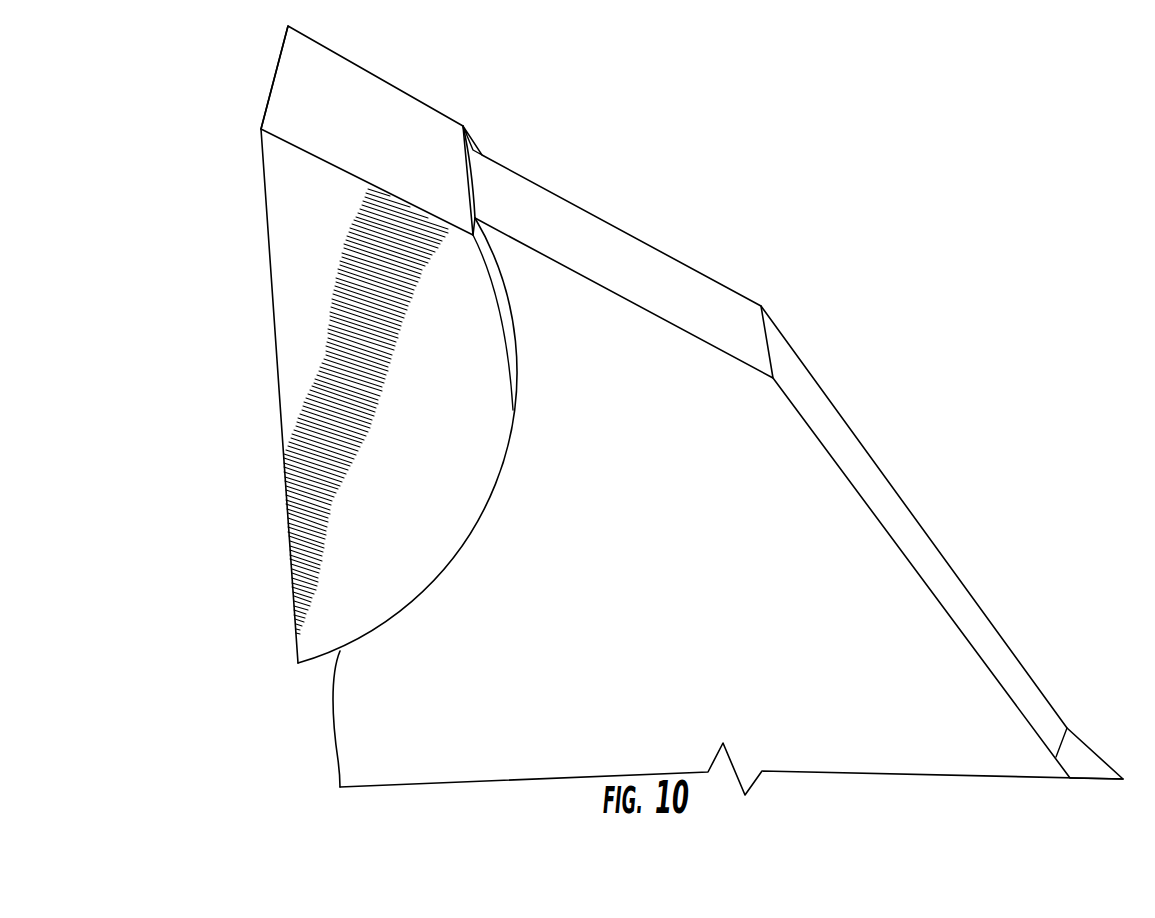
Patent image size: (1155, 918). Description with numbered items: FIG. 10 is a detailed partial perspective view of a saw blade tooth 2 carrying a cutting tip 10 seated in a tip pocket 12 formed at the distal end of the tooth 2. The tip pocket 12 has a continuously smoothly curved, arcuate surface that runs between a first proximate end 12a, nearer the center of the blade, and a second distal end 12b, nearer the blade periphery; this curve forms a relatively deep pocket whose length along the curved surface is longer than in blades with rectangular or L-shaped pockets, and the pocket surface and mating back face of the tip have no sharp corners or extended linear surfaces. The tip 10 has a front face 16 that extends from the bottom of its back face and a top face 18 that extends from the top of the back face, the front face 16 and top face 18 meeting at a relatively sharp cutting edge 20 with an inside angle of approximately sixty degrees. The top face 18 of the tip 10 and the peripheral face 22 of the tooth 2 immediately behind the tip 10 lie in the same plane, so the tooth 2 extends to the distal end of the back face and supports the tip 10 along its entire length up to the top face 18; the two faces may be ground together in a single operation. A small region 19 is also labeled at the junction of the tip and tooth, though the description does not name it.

The tip 10 is at (452, 109).
The top face 18 is at (382, 107).
The cutting edge 20 is at (268, 101).
The corner gusset 19 is at (474, 147).
The second distal end 12b is at (477, 217).
The tip pocket 12 is at (503, 290).
The first proximate end 12a is at (340, 651).
The front face 16 is at (277, 352).
The peripheral face 22 is at (680, 280).
The tooth 2 is at (783, 448).